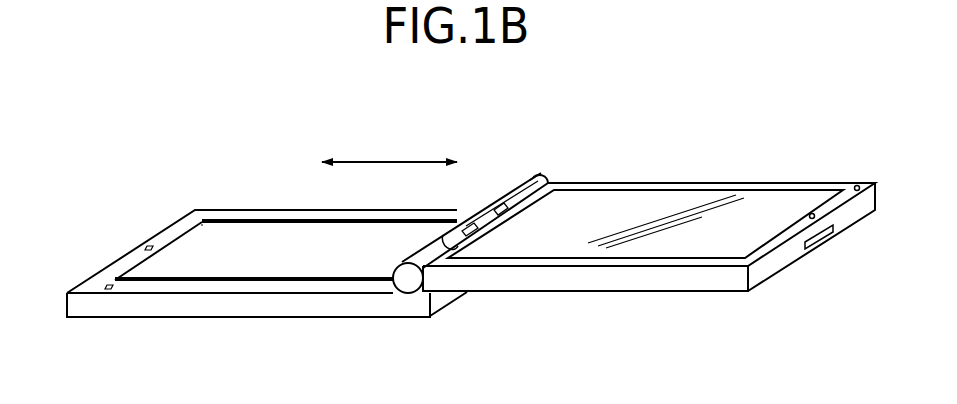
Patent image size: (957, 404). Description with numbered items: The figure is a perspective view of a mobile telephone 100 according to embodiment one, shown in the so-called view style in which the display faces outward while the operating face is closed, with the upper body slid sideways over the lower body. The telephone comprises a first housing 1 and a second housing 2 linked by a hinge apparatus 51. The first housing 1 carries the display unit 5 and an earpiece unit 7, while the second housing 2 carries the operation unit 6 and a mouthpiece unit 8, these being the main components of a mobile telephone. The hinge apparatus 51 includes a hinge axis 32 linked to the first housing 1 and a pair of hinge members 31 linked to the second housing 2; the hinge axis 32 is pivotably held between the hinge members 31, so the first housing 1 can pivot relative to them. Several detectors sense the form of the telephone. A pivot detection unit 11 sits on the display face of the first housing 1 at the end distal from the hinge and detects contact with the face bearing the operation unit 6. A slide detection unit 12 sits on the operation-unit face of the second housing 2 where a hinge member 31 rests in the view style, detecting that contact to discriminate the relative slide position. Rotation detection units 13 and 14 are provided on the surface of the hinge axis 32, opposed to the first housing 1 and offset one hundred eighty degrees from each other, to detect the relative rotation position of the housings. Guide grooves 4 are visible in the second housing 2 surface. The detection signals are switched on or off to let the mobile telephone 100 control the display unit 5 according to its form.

The mobile telephone 100 is at (116, 122).
The first housing 1 is at (600, 278).
The second housing 2 is at (257, 310).
The guide grooves 4 is at (257, 221).
The display unit 5 is at (643, 207).
The operation unit 6 is at (207, 234).
The earpiece unit 7 is at (811, 213).
The mouthpiece unit 8 is at (150, 245).
The pivot detection unit 11 is at (857, 185).
The slide detection unit 12 is at (109, 284).
The rotation detection unit 13 is at (498, 211).
The rotation detection unit 14 is at (460, 219).
The hinge member 31 is at (538, 182).
The hinge axis 32 is at (483, 220).
The hinge apparatus 51 is at (534, 169).